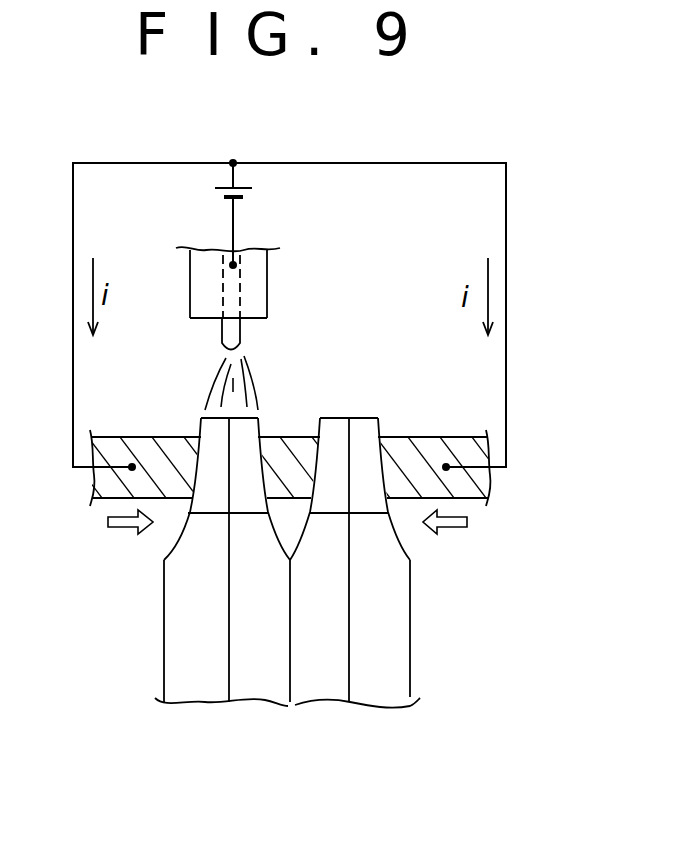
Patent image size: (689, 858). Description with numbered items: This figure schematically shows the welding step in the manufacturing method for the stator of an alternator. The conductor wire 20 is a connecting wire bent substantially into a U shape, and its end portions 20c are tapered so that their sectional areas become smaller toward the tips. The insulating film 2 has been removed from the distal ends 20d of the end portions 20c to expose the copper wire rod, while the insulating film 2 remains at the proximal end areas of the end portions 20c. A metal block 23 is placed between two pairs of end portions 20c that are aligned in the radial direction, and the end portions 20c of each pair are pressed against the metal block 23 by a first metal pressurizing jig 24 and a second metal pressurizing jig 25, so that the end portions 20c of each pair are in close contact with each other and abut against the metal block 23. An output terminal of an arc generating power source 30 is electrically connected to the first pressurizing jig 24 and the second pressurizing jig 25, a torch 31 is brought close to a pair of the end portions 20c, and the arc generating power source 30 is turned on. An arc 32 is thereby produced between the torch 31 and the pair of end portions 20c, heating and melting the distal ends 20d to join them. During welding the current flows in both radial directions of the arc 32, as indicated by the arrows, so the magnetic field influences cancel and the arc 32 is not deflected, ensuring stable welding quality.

The insulating film 2 is at (329, 531).
The conductor wire 20 is at (333, 528).
The end portions 20c is at (404, 532).
The distal ends 20d is at (332, 427).
The metal block 23 is at (293, 443).
The first metal pressurizing jig 24 is at (148, 447).
The second metal pressurizing jig 25 is at (435, 445).
The arc generating power source 30 is at (262, 193).
The torch 31 is at (227, 332).
The arc 32 is at (257, 377).